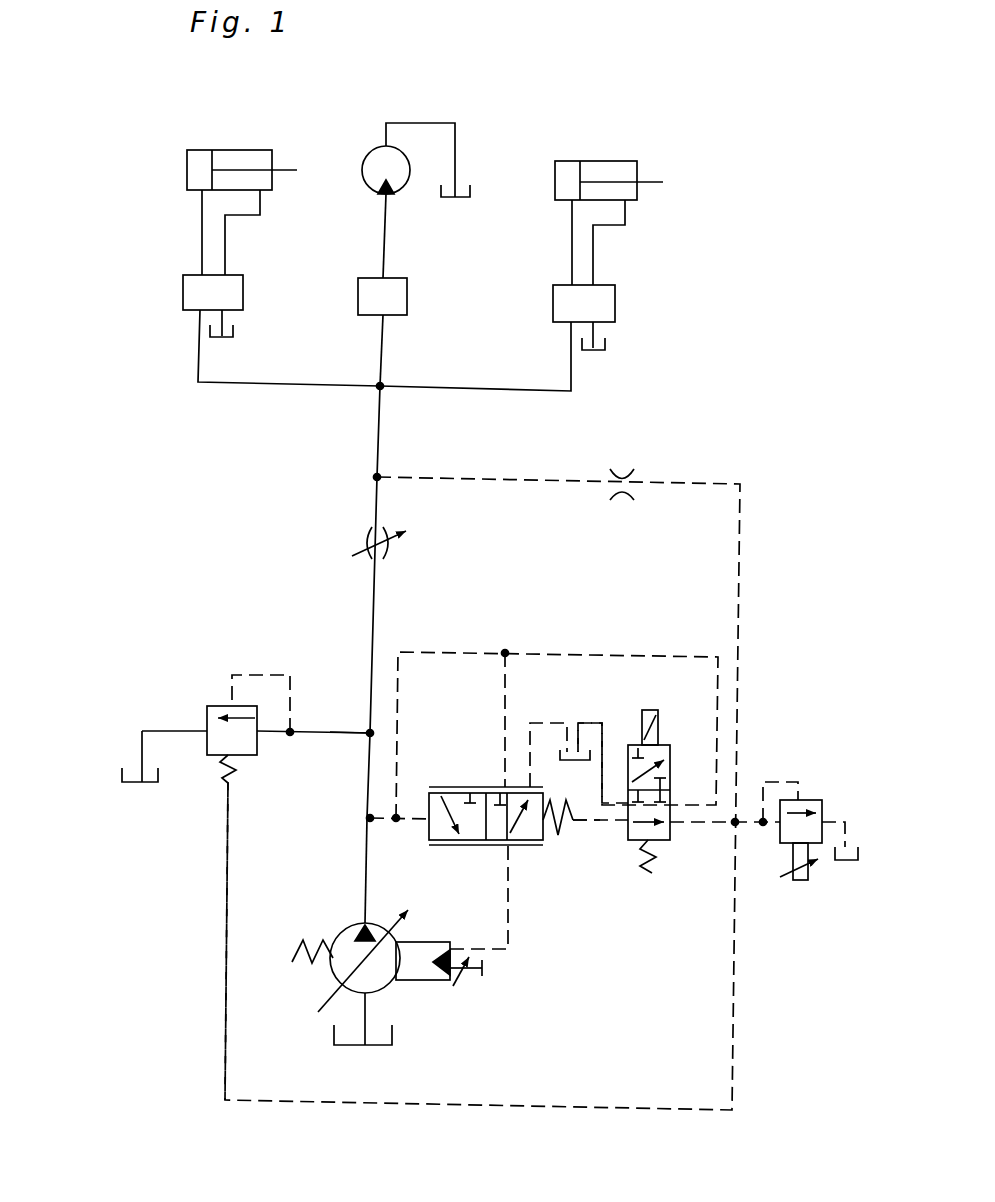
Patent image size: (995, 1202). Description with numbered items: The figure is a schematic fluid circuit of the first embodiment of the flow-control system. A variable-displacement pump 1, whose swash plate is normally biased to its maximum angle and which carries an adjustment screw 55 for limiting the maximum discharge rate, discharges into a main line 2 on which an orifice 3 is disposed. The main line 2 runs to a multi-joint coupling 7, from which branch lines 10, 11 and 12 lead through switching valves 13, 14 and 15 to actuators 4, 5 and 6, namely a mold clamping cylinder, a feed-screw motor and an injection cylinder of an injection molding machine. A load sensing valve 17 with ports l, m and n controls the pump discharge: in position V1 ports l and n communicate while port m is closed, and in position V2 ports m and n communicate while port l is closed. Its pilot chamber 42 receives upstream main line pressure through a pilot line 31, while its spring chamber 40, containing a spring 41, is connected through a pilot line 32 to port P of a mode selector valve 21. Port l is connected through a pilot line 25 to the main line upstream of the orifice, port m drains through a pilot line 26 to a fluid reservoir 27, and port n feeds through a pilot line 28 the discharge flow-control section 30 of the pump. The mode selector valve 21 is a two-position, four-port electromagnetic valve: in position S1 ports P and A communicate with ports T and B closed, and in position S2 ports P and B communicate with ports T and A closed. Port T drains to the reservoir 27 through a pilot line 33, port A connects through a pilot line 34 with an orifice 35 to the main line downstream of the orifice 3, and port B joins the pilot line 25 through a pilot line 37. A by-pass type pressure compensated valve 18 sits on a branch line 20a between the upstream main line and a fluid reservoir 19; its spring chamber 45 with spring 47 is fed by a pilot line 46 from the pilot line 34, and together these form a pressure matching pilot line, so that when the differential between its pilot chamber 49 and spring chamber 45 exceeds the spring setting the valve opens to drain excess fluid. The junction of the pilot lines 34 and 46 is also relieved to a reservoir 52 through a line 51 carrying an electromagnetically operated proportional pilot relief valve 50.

The variable-displacement pump 1 is at (333, 918).
The main line 2 is at (376, 430).
The orifice 3 is at (358, 540).
The actuator 4 is at (240, 149).
The actuator 5 is at (367, 149).
The actuator 6 is at (600, 159).
The multi-joint coupling 7 is at (381, 389).
The branch line 10 is at (197, 352).
The branch line 11 is at (380, 356).
The branch line 12 is at (571, 365).
The switching valve 13 is at (190, 296).
The switching valve 14 is at (363, 297).
The switching valve 15 is at (558, 305).
The load sensing valve 17 is at (449, 781).
The by-pass type pressure compensated valve 18 is at (204, 699).
The fluid reservoir 19 is at (125, 783).
The branch line 20a is at (330, 734).
The mode selector valve 21 is at (673, 850).
The pilot line 25 is at (432, 651).
The pilot line 26 is at (530, 722).
The fluid reservoir 27 is at (560, 757).
The pilot line 28 is at (508, 930).
The discharge flow-control section 30 is at (425, 968).
The pilot line 31 is at (412, 822).
The pilot line 32 is at (582, 830).
The pilot line 33 is at (605, 735).
The pilot line 34 is at (735, 725).
The orifice 35 is at (621, 477).
The pilot line 37 is at (668, 653).
The spring chamber 40 is at (548, 830).
The spring 41 is at (582, 805).
The pilot chamber 42 is at (445, 823).
The spring chamber 45 is at (232, 757).
The pilot line 46 is at (375, 1104).
The spring 47 is at (218, 782).
The pilot chamber 49 is at (228, 705).
The electromagnetically operated proportional pilot relief valve 50 is at (815, 796).
The line 51 is at (793, 845).
The reservoir 52 is at (845, 862).
The adjustment screw 55 is at (470, 966).
The position of mode selector valve S1 is at (650, 873).
The position of mode selector valve S2 is at (655, 757).
The port T is at (628, 805).
The port B is at (672, 803).
The port A is at (670, 825).
The port P is at (655, 830).
The port l is at (497, 787).
The port m is at (530, 790).
The port n is at (505, 845).
The position of load sensing valve V1 is at (455, 910).
The position of load sensing valve V2 is at (534, 912).